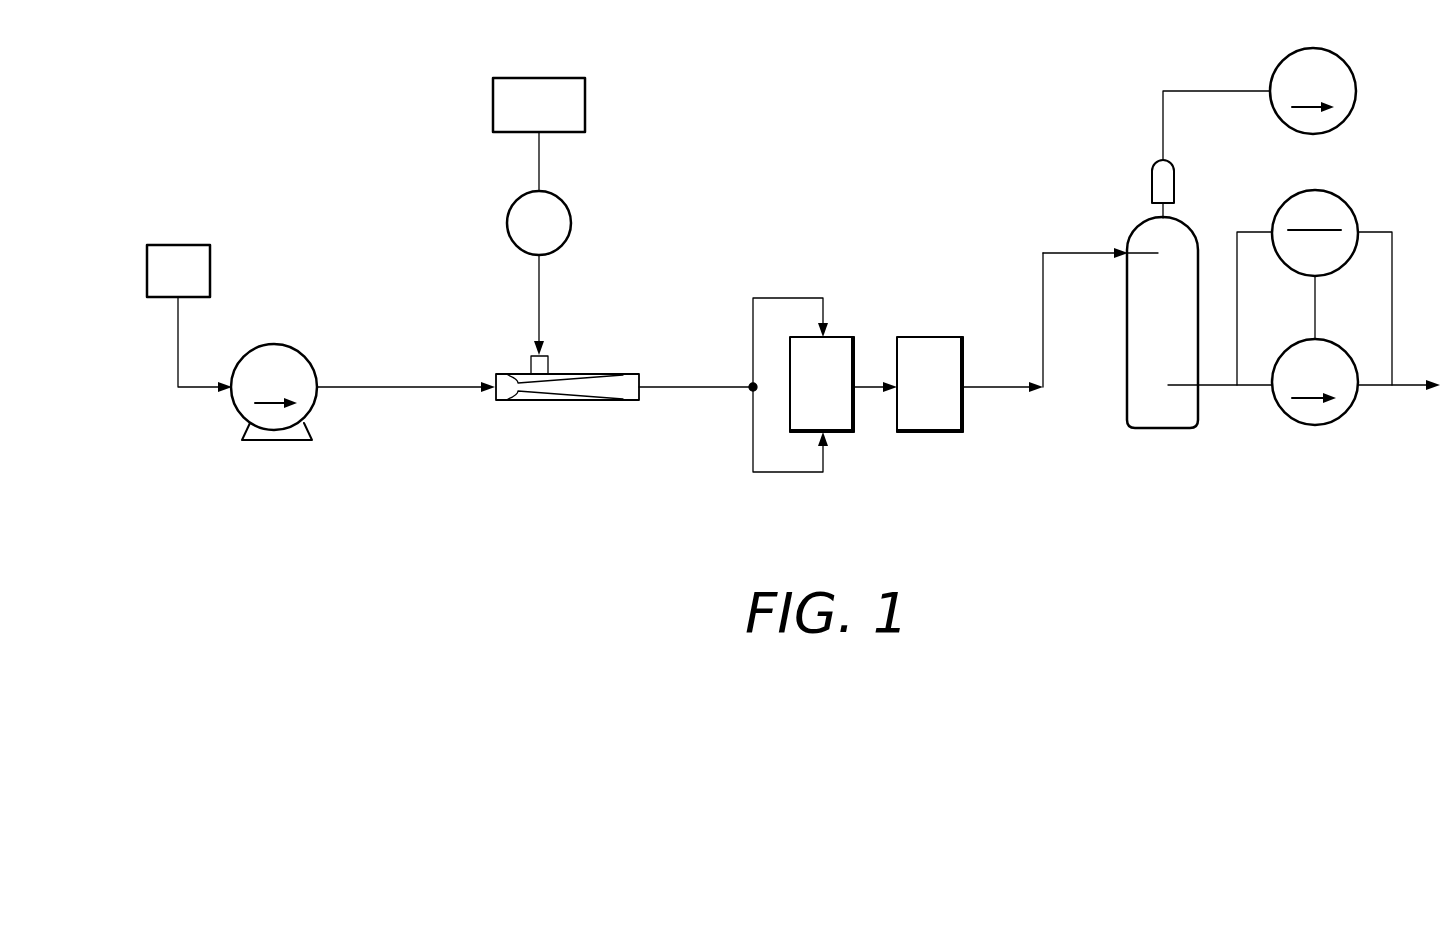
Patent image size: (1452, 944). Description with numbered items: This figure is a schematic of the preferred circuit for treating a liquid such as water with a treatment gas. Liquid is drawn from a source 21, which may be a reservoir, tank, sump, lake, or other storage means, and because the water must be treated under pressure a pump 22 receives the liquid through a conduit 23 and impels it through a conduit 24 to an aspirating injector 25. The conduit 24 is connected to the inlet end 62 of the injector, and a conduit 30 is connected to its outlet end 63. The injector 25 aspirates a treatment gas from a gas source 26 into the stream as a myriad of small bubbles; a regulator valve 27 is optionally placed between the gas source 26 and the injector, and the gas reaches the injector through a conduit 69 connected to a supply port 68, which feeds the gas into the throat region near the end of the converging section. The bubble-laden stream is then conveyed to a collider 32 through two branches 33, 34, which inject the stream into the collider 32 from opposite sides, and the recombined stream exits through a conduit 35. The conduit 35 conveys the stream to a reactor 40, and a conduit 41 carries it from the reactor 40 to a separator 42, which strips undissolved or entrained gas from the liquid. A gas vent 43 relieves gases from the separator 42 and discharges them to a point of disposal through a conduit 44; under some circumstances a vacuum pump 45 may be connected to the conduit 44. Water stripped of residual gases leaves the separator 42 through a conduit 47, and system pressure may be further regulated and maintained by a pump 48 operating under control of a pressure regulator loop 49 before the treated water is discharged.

The source 21 is at (184, 244).
The pump 22 is at (277, 344).
The conduit 23 is at (191, 390).
The conduit 24 is at (369, 392).
The aspirating injector 25 is at (540, 402).
The gas source 26 is at (557, 78).
The regulator valve 27 is at (571, 222).
The conduit 30 is at (705, 390).
The collider 32 is at (848, 320).
The branch 33 is at (786, 298).
The branch 34 is at (784, 472).
The conduit 35 is at (876, 390).
The reactor 40 is at (923, 337).
The conduit 41 is at (1008, 390).
The separator 42 is at (1125, 410).
The gas vent 43 is at (1152, 178).
The conduit 44 is at (1162, 117).
The vacuum pump 45 is at (1317, 49).
The conduit 47 is at (1220, 388).
The pump 48 is at (1335, 424).
The pressure regulator loop 49 is at (1325, 192).
The inlet end 62 is at (496, 392).
The outlet end 63 is at (640, 400).
The supply port 68 is at (548, 360).
The conduit 69 is at (541, 292).